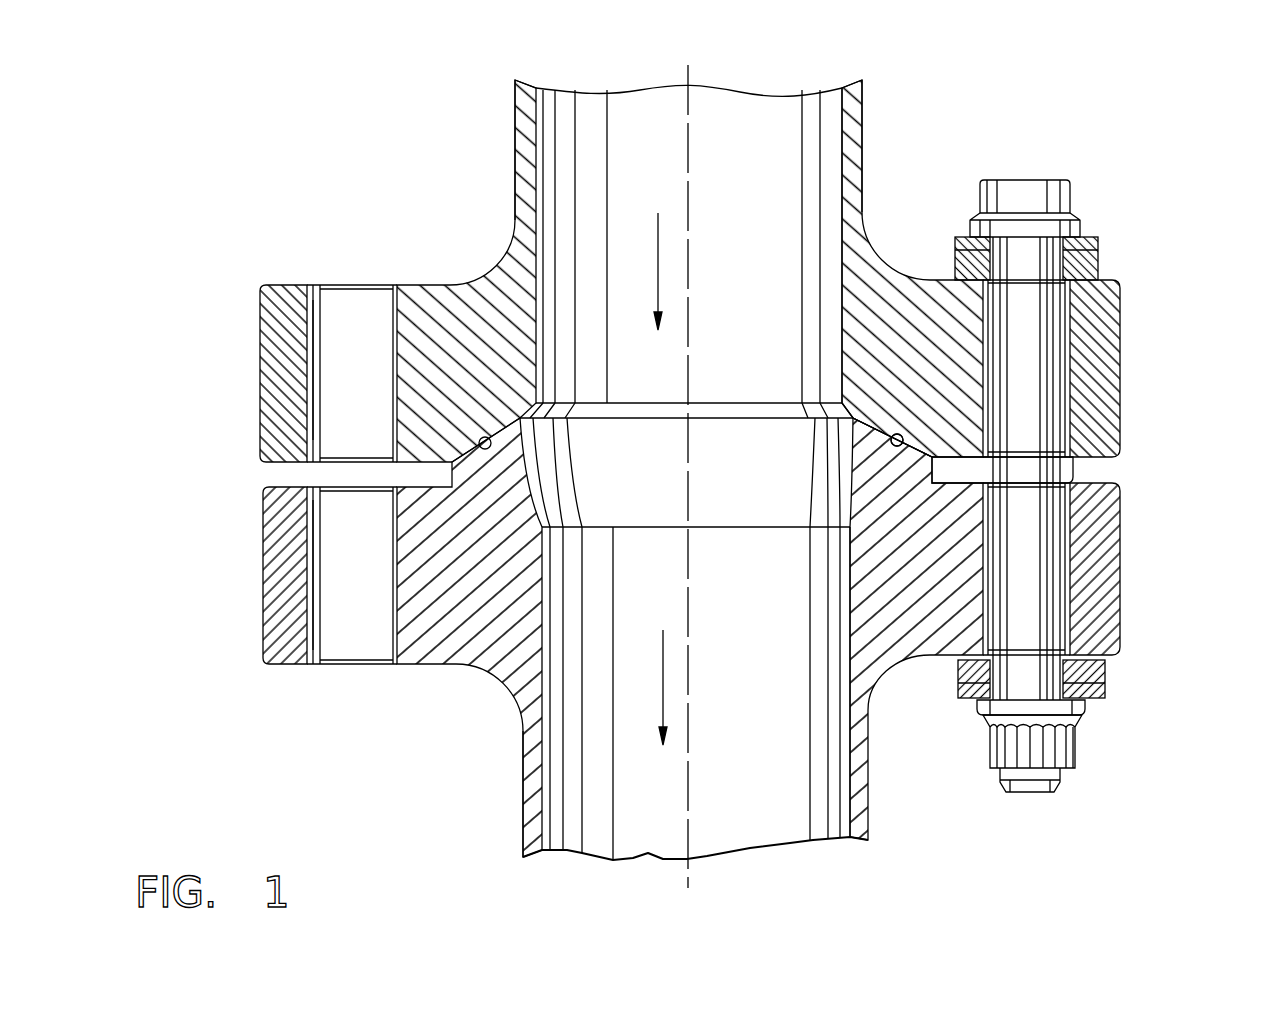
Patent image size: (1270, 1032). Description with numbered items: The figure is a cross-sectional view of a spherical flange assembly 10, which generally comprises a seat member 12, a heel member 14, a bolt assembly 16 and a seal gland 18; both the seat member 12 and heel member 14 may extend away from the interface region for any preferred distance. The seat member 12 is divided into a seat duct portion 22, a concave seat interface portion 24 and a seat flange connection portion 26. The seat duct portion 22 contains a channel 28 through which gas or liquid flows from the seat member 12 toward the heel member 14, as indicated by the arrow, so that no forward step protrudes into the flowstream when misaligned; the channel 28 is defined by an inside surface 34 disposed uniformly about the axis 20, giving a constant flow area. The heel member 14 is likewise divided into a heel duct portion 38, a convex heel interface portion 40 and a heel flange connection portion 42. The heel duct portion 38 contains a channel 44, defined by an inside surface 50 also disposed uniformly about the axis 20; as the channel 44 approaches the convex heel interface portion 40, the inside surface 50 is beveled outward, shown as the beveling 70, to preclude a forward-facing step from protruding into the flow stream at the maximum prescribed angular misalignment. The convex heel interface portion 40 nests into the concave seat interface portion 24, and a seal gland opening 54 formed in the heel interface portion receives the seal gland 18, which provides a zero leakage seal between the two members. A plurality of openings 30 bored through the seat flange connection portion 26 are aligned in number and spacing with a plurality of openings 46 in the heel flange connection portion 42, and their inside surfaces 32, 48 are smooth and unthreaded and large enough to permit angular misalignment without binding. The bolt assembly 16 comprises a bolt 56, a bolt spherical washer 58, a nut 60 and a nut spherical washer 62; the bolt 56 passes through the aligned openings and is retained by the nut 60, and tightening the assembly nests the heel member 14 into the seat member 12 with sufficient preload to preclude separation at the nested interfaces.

The spherical flange assembly 10 is at (250, 98).
The seat member 12 is at (868, 140).
The heel member 14 is at (870, 763).
The bolt assembly 16 is at (1108, 465).
The seal gland 18 is at (492, 446).
The axis 20 is at (697, 133).
The seat duct portion 22 is at (515, 155).
The concave seat interface portion 24 is at (525, 423).
The seat flange connection portion 26 is at (258, 372).
The channel 28 is at (755, 243).
The openings 30 is at (340, 300).
The inside surface 32 is at (312, 418).
The inside surface 34 is at (840, 316).
The heel duct portion 38 is at (522, 808).
The convex heel interface portion 40 is at (870, 405).
The heel flange connection portion 42 is at (262, 575).
The channel 44 is at (760, 678).
The openings 46 is at (347, 655).
The inside surface 48 is at (393, 632).
The inside surface 50 is at (848, 572).
The seal gland opening 54 is at (888, 434).
The bolt 56 is at (1024, 178).
The bolt spherical washer 58 is at (1103, 268).
The nut 60 is at (1072, 746).
The nut spherical washer 62 is at (1105, 692).
The beveling 70 is at (542, 508).